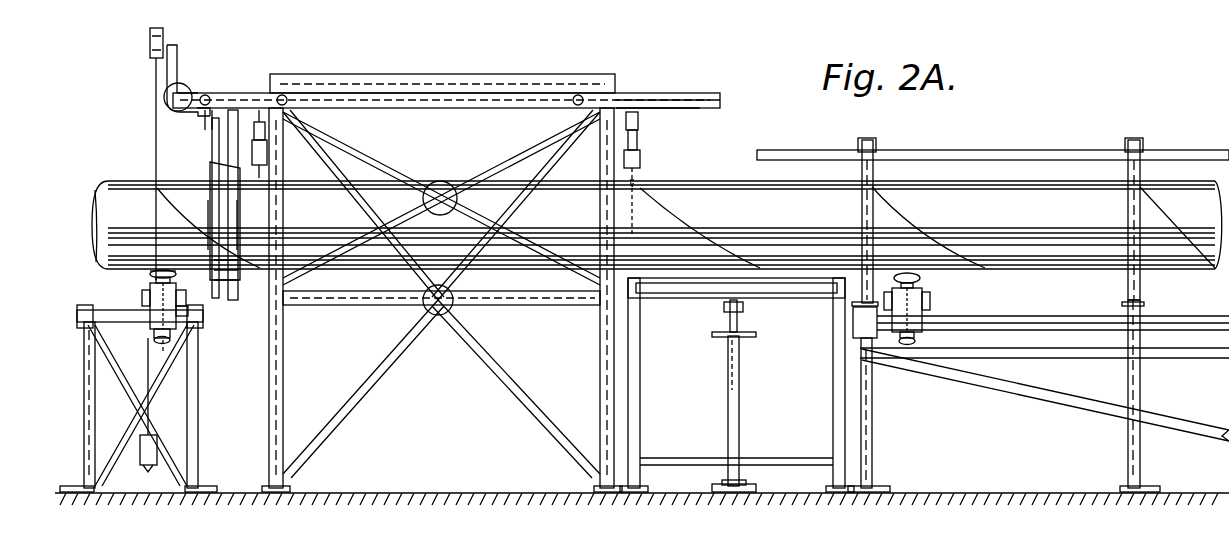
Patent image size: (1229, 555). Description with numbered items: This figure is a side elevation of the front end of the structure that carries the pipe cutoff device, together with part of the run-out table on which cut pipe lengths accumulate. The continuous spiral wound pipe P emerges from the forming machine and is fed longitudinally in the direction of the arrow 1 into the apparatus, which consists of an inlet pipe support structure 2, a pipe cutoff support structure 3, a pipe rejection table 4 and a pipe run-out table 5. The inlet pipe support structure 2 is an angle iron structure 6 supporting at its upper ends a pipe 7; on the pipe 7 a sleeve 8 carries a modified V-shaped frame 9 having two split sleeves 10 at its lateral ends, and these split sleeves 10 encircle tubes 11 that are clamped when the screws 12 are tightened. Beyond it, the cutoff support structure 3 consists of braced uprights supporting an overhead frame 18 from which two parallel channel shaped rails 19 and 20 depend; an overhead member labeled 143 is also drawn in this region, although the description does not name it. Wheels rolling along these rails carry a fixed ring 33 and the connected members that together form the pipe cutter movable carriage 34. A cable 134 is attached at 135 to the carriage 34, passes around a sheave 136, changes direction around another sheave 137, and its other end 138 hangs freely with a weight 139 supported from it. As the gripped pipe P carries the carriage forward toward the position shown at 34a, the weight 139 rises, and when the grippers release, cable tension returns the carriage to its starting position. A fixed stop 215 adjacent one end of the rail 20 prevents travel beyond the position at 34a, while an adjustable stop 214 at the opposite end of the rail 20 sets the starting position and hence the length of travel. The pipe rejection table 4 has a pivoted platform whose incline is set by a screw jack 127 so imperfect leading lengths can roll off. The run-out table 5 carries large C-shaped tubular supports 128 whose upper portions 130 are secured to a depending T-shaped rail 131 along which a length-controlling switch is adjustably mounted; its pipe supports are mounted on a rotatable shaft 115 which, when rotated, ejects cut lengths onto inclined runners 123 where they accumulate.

The arrow 1 is at (82, 155).
The inlet pipe support structure 2 is at (200, 400).
The pipe cutoff support structure 3 is at (432, 400).
The pipe rejection table 4 is at (685, 392).
The pipe run-out table 5 is at (988, 400).
The angle iron structure 6 is at (82, 415).
The pipe 7 is at (100, 310).
The sleeve 8 is at (150, 310).
The modified V-shaped frame 9 is at (154, 296).
The split sleeves 10 is at (170, 292).
The tubes 11 is at (172, 334).
The screws 12 is at (180, 306).
The overhead frame 18 is at (512, 72).
The channel shaped rail 19 is at (445, 78).
The channel shaped rail 20 is at (383, 75).
The fixed ring 33 is at (222, 296).
The pipe cutter movable carriage 34 is at (232, 320).
The forward position of carriage 34a is at (642, 150).
The shaft 115 is at (1015, 318).
The inclined runners 123 is at (850, 302).
The screw jack 127 is at (745, 416).
The C-shaped tubular supports 128 is at (878, 176).
The portions 130 is at (872, 142).
The T-shaped rail 131 is at (1022, 140).
The cable 134 is at (200, 118).
The cable attachment point 135 is at (258, 108).
The sheave 136 is at (186, 85).
The sheave 137 is at (150, 42).
The cable end 138 is at (154, 125).
The weight 139 is at (140, 455).
The overhead track beam 143 is at (640, 100).
The adjustable stop 214 is at (210, 110).
The fixed stop 215 is at (690, 112).
The pipe P is at (680, 182).